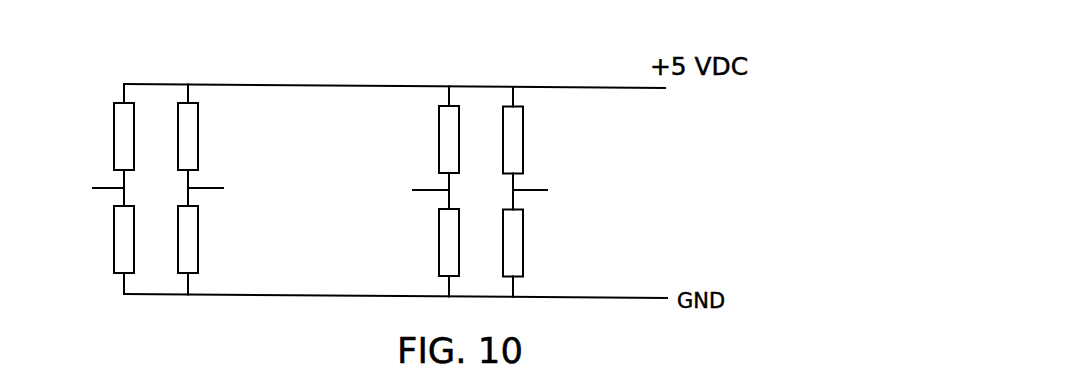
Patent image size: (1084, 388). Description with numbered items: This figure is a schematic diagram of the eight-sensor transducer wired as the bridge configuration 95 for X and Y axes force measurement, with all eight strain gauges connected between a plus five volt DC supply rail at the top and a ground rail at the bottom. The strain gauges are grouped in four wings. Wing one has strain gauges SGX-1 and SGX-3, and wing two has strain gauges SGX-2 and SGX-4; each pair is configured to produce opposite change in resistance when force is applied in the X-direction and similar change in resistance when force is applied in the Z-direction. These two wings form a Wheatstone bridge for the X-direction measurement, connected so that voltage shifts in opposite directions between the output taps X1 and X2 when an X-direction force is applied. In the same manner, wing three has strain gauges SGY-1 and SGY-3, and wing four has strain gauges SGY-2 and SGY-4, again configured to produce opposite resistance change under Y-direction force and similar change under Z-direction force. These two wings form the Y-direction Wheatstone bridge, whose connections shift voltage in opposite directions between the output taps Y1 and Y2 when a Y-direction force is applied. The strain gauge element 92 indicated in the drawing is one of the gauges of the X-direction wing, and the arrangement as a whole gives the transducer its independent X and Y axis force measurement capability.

The strain gauge resistor 92 is at (116, 115).
The bridge configuration 95 is at (157, 300).
The X1 bridge output X1 is at (222, 203).
The X2 bridge output X2 is at (93, 202).
The Y1 bridge output Y1 is at (546, 204).
The Y2 bridge output Y2 is at (415, 204).
The strain gauge SGX-1 is at (231, 146).
The strain gauge SGX-2 is at (87, 145).
The strain gauge SGX-3 is at (232, 250).
The strain gauge SGX-4 is at (88, 250).
The strain gauge SGY-1 is at (555, 148).
The strain gauge SGY-2 is at (411, 147).
The strain gauge SGY-3 is at (555, 253).
The strain gauge SGY-4 is at (411, 252).